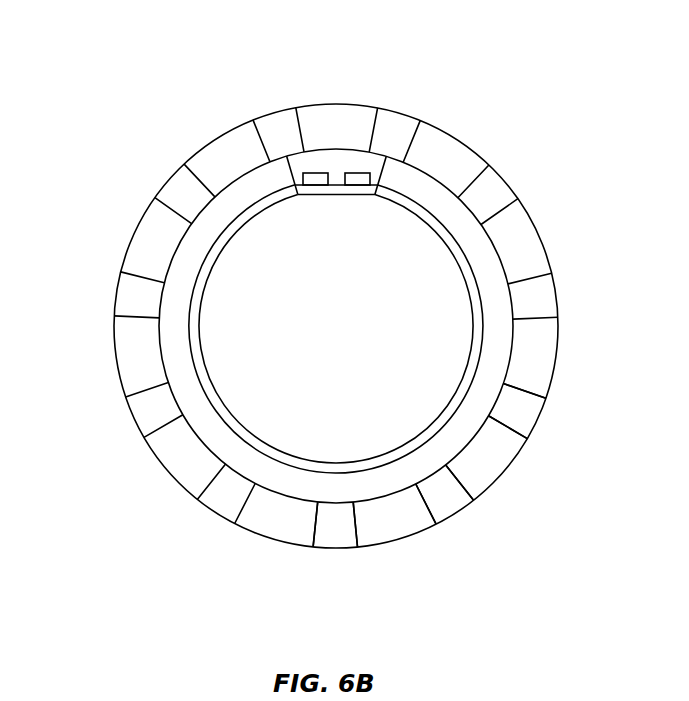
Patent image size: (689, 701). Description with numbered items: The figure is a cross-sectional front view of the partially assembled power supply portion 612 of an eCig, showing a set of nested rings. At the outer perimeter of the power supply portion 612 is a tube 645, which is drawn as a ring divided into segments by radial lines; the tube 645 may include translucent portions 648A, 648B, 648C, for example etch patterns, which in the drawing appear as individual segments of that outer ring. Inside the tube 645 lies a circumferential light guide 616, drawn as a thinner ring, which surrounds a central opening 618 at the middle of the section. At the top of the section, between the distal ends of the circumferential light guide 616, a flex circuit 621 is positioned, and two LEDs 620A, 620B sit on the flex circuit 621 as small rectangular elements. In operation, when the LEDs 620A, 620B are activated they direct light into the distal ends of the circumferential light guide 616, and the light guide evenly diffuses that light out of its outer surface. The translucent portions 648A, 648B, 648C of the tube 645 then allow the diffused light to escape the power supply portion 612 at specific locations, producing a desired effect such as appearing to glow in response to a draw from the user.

The power supply portion 612 is at (130, 137).
The circumferential light guide 616 is at (493, 298).
The central opening 618 is at (410, 238).
The LED 620A is at (363, 172).
The LED 620B is at (313, 172).
The flex circuit 621 is at (338, 186).
The tube 645 is at (562, 362).
The translucent portion 648A is at (520, 410).
The translucent portion 648B is at (438, 492).
The translucent portion 648C is at (343, 528).